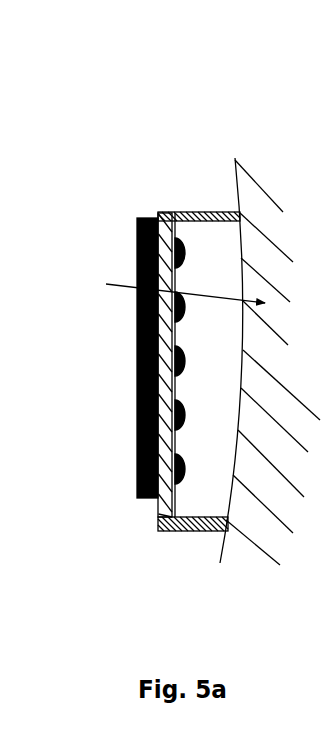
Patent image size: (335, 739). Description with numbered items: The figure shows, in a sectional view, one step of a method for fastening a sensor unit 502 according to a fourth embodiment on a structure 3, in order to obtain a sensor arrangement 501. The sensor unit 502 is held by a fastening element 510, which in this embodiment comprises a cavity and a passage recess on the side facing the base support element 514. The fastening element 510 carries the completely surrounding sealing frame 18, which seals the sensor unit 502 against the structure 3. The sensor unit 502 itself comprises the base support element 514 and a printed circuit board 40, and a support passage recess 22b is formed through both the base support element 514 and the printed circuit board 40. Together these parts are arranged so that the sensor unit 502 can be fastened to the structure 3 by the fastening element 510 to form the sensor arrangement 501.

The sensor arrangement 501 is at (140, 143).
The sensor unit 502 is at (224, 208).
The structure 3 is at (175, 278).
The base support element 514 is at (137, 403).
The printed circuit board 40 is at (167, 453).
The support passage recess 22b is at (164, 512).
The sealing frame 18 is at (200, 527).
The fastening element 510 is at (197, 563).